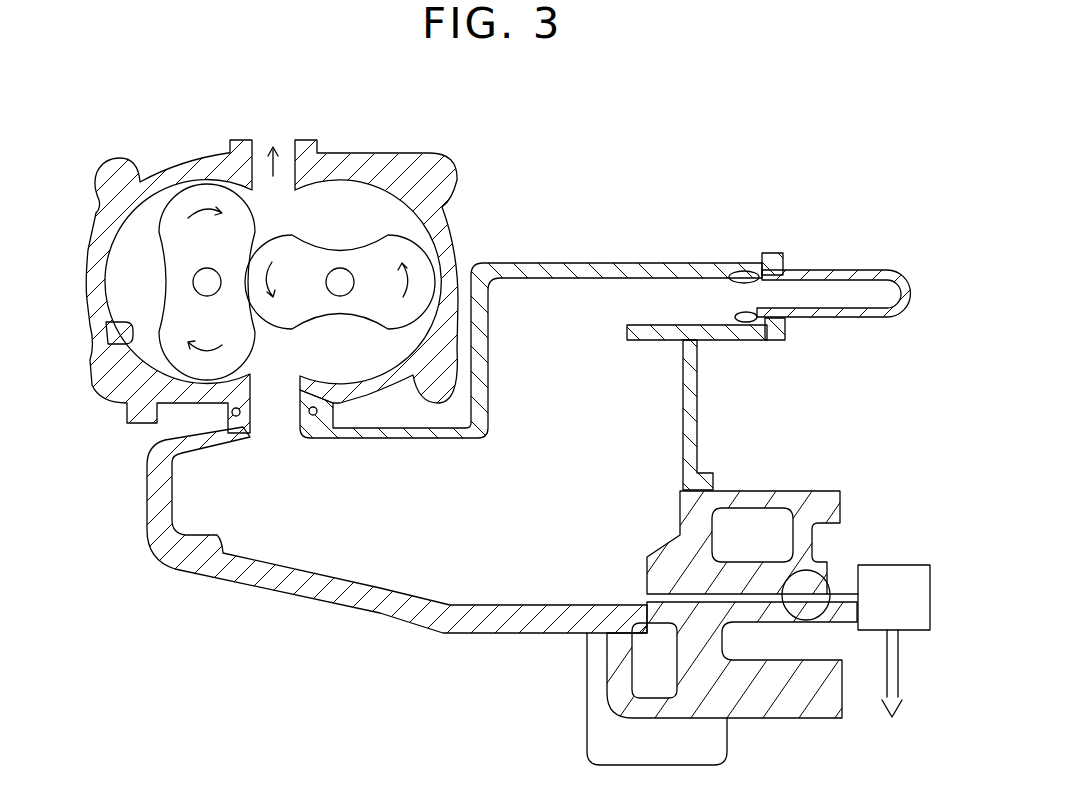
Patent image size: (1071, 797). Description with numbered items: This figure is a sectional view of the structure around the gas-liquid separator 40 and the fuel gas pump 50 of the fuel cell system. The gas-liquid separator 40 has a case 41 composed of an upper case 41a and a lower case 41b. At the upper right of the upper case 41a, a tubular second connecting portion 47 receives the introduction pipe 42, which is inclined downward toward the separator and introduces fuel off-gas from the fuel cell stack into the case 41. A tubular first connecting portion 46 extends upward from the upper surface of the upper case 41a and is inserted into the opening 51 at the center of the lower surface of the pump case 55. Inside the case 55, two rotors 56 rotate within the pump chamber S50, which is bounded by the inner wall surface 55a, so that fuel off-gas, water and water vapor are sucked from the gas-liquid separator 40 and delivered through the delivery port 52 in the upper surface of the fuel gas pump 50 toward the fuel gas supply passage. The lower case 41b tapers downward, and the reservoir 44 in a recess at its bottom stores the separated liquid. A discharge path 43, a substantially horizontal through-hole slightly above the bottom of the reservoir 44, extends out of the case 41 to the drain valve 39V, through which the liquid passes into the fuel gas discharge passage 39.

The fuel gas discharge passage 39 is at (900, 653).
The drain valve 39V is at (901, 567).
The gas-liquid separator 40 is at (718, 441).
The case 41 is at (733, 459).
The upper case 41a is at (698, 409).
The lower case 41b is at (748, 497).
The introduction pipe 42 is at (828, 268).
The discharge path 43 is at (818, 574).
The reservoir 44 is at (397, 580).
The first connecting portion 46 is at (243, 416).
The second connecting portion 47 is at (660, 266).
The fuel gas pump 50 is at (396, 241).
The opening 51 is at (280, 380).
The delivery port 52 is at (258, 126).
The case 55 is at (442, 213).
The inner wall surface 55a is at (133, 329).
The rotors 56 is at (160, 234).
The pump chamber S50 is at (133, 273).